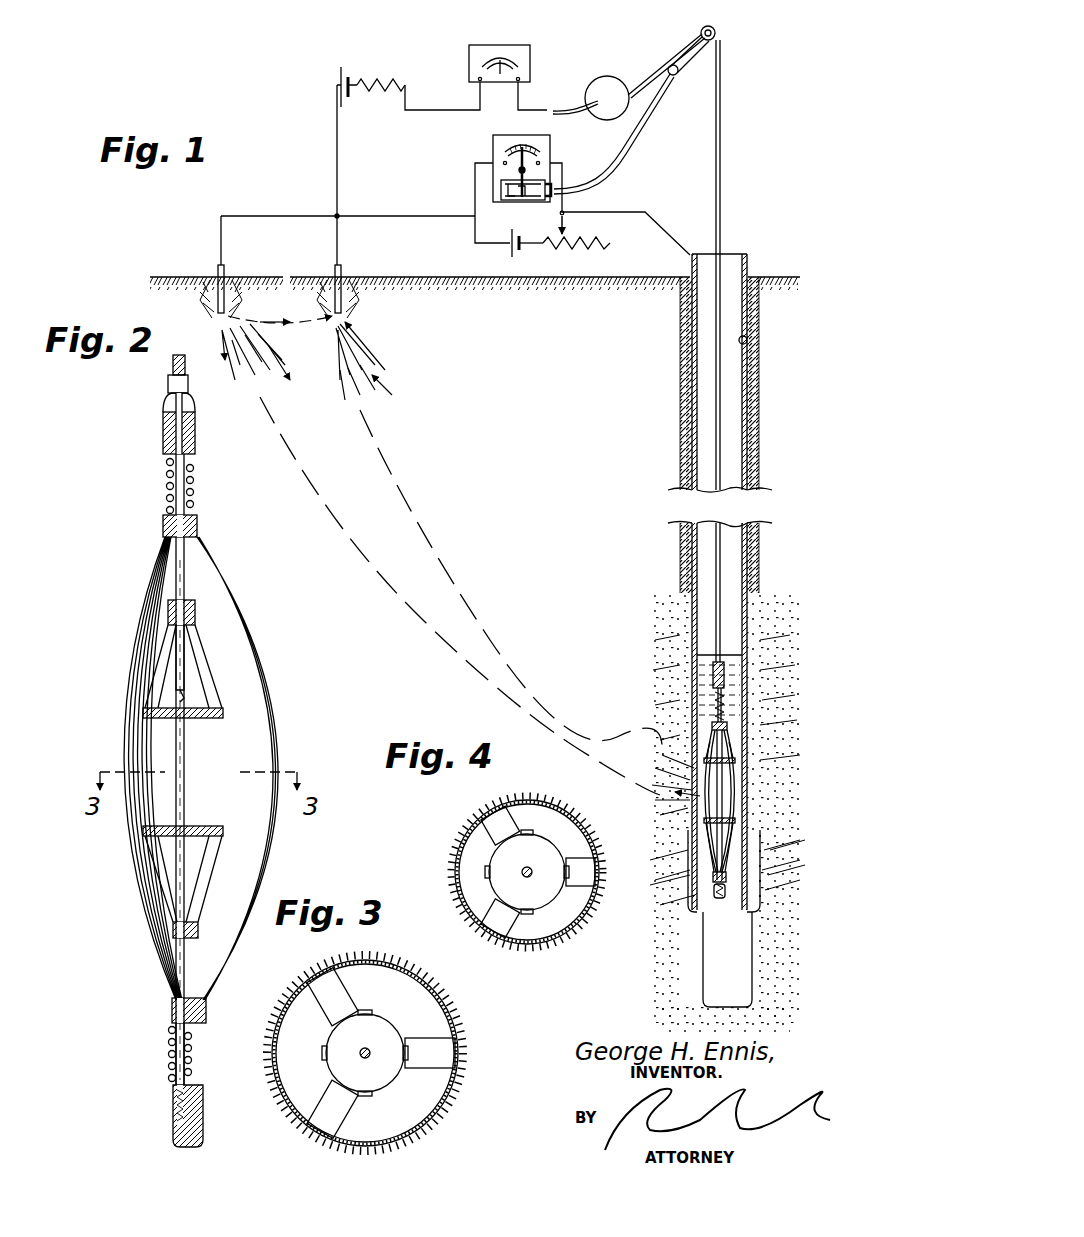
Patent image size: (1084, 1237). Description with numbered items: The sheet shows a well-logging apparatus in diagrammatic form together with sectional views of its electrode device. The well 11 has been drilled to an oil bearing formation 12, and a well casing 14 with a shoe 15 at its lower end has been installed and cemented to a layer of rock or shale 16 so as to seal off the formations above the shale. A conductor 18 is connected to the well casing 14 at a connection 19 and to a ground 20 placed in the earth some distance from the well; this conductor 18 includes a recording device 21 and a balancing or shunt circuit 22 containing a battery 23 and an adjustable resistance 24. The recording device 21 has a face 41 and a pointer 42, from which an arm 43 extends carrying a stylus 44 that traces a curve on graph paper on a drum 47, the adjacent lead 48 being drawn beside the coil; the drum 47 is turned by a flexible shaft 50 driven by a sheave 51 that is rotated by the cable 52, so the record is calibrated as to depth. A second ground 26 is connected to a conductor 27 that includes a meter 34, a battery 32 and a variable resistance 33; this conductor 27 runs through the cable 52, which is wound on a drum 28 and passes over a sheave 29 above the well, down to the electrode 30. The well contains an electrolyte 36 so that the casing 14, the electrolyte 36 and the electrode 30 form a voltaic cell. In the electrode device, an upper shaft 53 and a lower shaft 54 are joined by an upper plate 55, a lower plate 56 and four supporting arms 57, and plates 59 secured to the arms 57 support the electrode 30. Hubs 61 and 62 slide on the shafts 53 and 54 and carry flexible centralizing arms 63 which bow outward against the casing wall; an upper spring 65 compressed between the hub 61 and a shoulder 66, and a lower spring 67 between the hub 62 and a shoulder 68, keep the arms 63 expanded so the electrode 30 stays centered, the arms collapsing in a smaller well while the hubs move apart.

In FIG. 1, the well 11 is at (748, 342).
In FIG. 1, the oil bearing formation 12 is at (757, 910).
In FIG. 1, the well casing 14 is at (692, 440).
In FIG. 3, the well casing 14 is at (300, 975).
In FIG. 4, the well casing 14 is at (458, 840).
In FIG. 1, the shoe 15 is at (690, 896).
In FIG. 1, the layer of rock or shale 16 is at (775, 865).
In FIG. 1, the conductor 18 is at (291, 216).
In FIG. 1, the connection of conductor to casing 19 is at (690, 258).
In FIG. 1, the ground 20 is at (217, 270).
In FIG. 1, the recording device 21 is at (489, 140).
In FIG. 1, the balancing or shunt circuit 22 is at (475, 233).
In FIG. 1, the battery or other source of energy 23 is at (511, 250).
In FIG. 1, the adjustable resistance 24 is at (556, 247).
In FIG. 1, the ground 26 is at (344, 272).
In FIG. 1, the conductor 27 is at (338, 82).
In FIG. 1, the drum 28 is at (605, 76).
In FIG. 1, the sheave 29 is at (716, 34).
In FIG. 1, the electrode 30 is at (750, 782).
In FIG. 2, the electrode 30 is at (176, 750).
In FIG. 3, the electrode 30 is at (362, 1059).
In FIG. 4, the electrode 30 is at (524, 878).
In FIG. 1, the battery 32 is at (349, 74).
In FIG. 1, the variable resistance 33 is at (400, 92).
In FIG. 1, the meter 34 is at (491, 45).
In FIG. 1, the electrolyte 36 is at (760, 660).
In FIG. 1, the face 41 is at (540, 147).
In FIG. 1, the pointer 42 is at (503, 163).
In FIG. 1, the arm 43 is at (549, 185).
In FIG. 1, the stylus 44 is at (526, 197).
In FIG. 1, the drum 47 is at (513, 190).
In FIG. 1, the relay coil lead 48 is at (512, 200).
In FIG. 1, the flexible shaft 50 is at (637, 148).
In FIG. 1, the sheave 51 is at (677, 76).
In FIG. 1, the cable 52 is at (672, 50).
In FIG. 2, the cable 52 is at (173, 364).
In FIG. 2, the upper shaft 53 is at (177, 592).
In FIG. 2, the lower shaft 54 is at (176, 1058).
In FIG. 2, the upper plate 55 is at (190, 600).
In FIG. 2, the lower plate 56 is at (198, 930).
In FIG. 2, the supporting arms 57 is at (222, 705).
In FIG. 2, the plates 59 is at (143, 713).
In FIG. 3, the plates 59 is at (335, 1063).
In FIG. 4, the plates 59 is at (507, 878).
In FIG. 2, the hub 61 is at (163, 528).
In FIG. 2, the hub 62 is at (172, 1008).
In FIG. 2, the centralizing arms 63 is at (134, 668).
In FIG. 3, the centralizing arms 63 is at (456, 1052).
In FIG. 4, the centralizing arms 63 is at (500, 940).
In FIG. 2, the upper spring 65 is at (193, 474).
In FIG. 2, the shoulder 66 is at (163, 432).
In FIG. 2, the lower spring 67 is at (176, 1080).
In FIG. 2, the shoulder 68 is at (173, 1114).